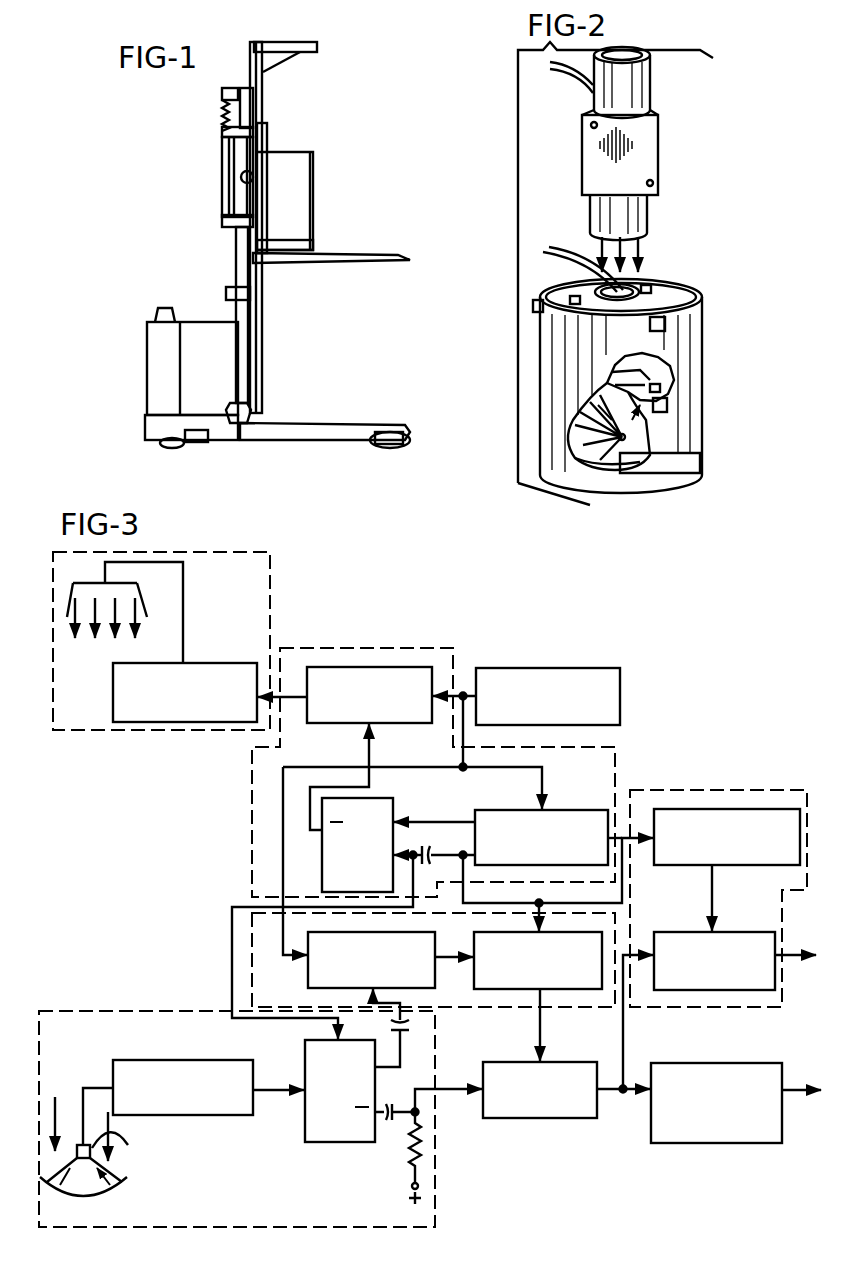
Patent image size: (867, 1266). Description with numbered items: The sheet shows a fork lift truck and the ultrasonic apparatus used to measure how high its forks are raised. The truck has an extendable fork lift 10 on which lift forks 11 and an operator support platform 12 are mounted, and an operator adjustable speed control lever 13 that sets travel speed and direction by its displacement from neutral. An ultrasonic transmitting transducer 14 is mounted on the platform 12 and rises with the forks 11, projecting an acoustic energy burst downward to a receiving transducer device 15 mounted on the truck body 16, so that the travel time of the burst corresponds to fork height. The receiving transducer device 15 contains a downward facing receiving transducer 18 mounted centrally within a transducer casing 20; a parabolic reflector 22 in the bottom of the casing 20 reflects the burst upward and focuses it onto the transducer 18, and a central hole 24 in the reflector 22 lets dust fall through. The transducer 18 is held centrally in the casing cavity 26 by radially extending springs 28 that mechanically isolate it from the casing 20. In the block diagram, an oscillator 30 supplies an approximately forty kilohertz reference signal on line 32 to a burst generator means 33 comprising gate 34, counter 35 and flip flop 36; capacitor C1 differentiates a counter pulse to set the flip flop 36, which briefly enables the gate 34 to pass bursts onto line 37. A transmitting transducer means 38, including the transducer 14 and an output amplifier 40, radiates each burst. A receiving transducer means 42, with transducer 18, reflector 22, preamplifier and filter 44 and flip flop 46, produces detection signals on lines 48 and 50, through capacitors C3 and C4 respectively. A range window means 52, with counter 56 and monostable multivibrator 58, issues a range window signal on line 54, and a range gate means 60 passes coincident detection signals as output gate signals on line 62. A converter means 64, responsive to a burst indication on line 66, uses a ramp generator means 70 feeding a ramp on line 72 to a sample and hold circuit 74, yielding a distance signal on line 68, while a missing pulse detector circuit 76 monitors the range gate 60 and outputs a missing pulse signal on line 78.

In FIG. 1, the extendable fork lift 10 is at (236, 262).
In FIG. 1, the lift forks 11 is at (357, 263).
In FIG. 1, the operator support platform 12 is at (293, 248).
In FIG. 1, the speed control lever 13 is at (267, 150).
In FIG. 1, the ultrasonic transmitting transducer 14 is at (241, 177).
In FIG. 2, the ultrasonic transmitting transducer 14 is at (650, 157).
In FIG. 3, the ultrasonic transmitting transducer 14 is at (140, 595).
In FIG. 1, the receiving transducer device 15 is at (255, 418).
In FIG. 2, the receiving transducer device 15 is at (742, 362).
In FIG. 1, the truck body 16 is at (280, 432).
In FIG. 2, the receiving transducer 18 is at (665, 367).
In FIG. 3, the receiving transducer 18 is at (101, 1124).
In FIG. 2, the transducer casing 20 is at (700, 328).
In FIG. 2, the parabolic reflector 22 is at (650, 433).
In FIG. 3, the parabolic reflector 22 is at (125, 1180).
In FIG. 2, the central hole 24 is at (624, 440).
In FIG. 2, the casing cavity 26 is at (672, 302).
In FIG. 2, the springs 28 is at (650, 288).
In FIG. 3, the oscillator 30 is at (572, 668).
In FIG. 3, the reference oscillator output line 32 is at (466, 694).
In FIG. 3, the burst generator means 33 is at (453, 648).
In FIG. 3, the gate 34 is at (365, 667).
In FIG. 3, the counter 35 is at (552, 810).
In FIG. 3, the flip flop 36 is at (382, 798).
In FIG. 3, the ultrasonic burst signal line 37 is at (265, 690).
In FIG. 3, the ultrasonic transmitting transducer means 38 is at (270, 568).
In FIG. 3, the output amplifier 40 is at (210, 663).
In FIG. 3, the ultrasonic receiving transducer means 42 is at (160, 1011).
In FIG. 3, the preamplifier and filter 44 is at (172, 1060).
In FIG. 3, the flip flop 46 is at (305, 1055).
In FIG. 3, the detection signal line 48 is at (408, 1022).
In FIG. 3, the detection signal line 50 is at (443, 1091).
In FIG. 3, the range window means 52 is at (546, 1010).
In FIG. 3, the range window signal line 54 is at (540, 1033).
In FIG. 3, the counter 56 is at (308, 978).
In FIG. 3, the monostable multivibrator 58 is at (478, 989).
In FIG. 3, the range gate means 60 is at (515, 1118).
In FIG. 3, the output gate signal line 62 is at (618, 1092).
In FIG. 3, the converter means 64 is at (722, 790).
In FIG. 3, the burst indication line 66 is at (615, 890).
In FIG. 3, the output distance signal line 68 is at (782, 958).
In FIG. 3, the ramp generator means 70 is at (712, 872).
In FIG. 3, the ramp signal line 72 is at (712, 900).
In FIG. 3, the sample and hold circuit 74 is at (690, 932).
In FIG. 3, the missing pulse detector circuit 76 is at (728, 1063).
In FIG. 3, the missing pulse signal output line 78 is at (790, 1092).
In FIG. 3, the capacitor C1 is at (436, 843).
In FIG. 3, the capacitor C3 is at (382, 1025).
In FIG. 3, the capacitor C4 is at (395, 1101).